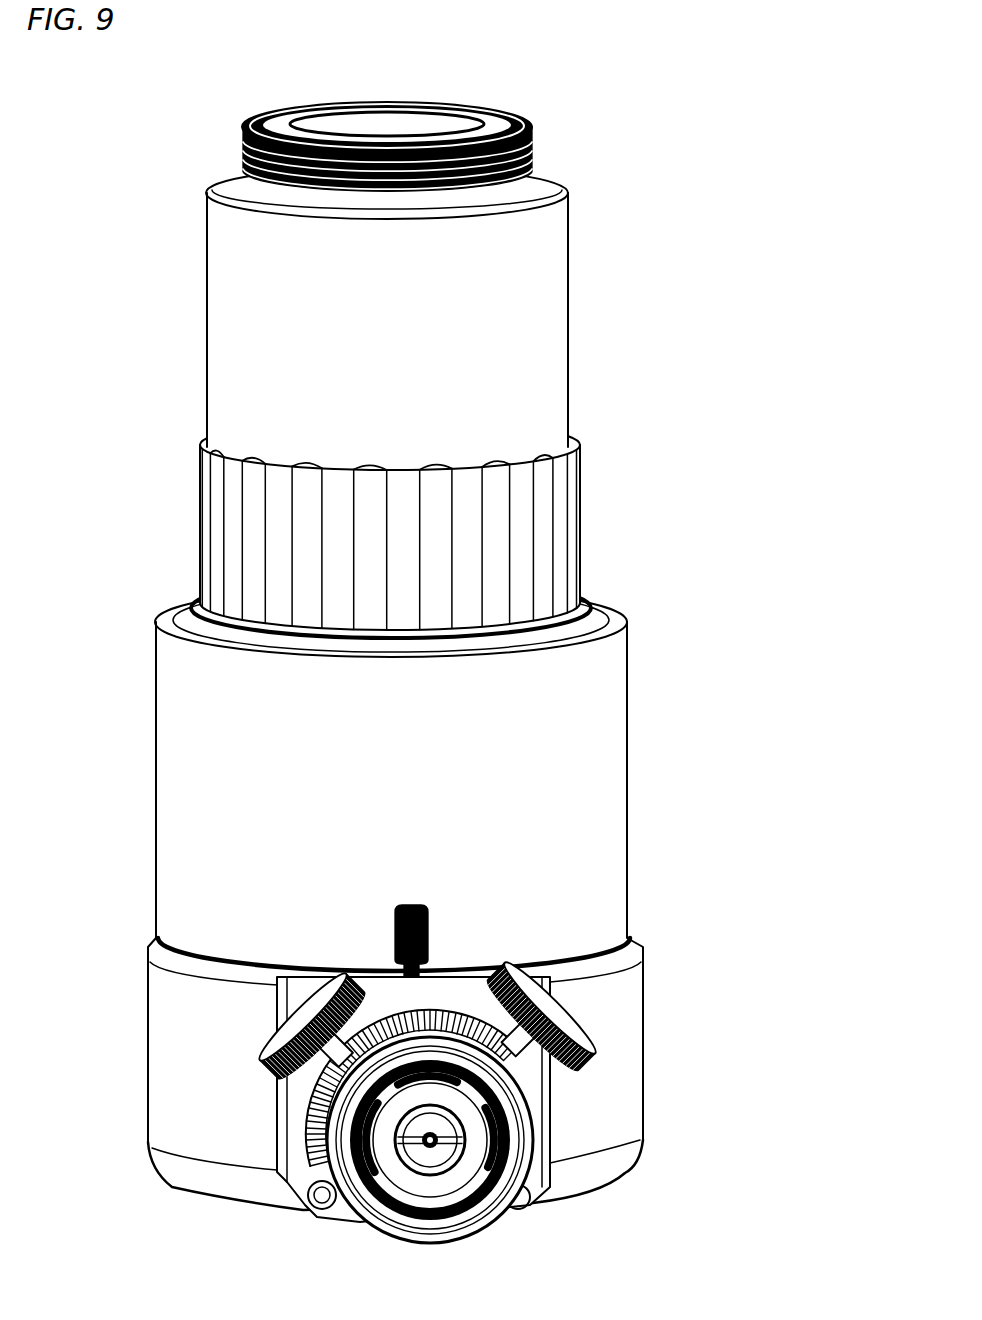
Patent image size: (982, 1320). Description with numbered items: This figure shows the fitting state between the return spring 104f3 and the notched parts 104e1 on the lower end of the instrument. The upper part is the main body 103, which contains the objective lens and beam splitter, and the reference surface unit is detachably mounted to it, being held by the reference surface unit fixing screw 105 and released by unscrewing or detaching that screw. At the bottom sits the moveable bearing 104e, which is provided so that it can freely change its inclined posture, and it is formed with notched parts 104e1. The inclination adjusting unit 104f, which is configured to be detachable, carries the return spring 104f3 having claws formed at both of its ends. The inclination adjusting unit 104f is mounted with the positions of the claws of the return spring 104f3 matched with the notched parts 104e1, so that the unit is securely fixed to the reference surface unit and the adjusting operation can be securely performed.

The main body 103 is at (617, 778).
The reference surface unit fixing screw 105 is at (432, 935).
The inclination adjusting unit 104f is at (527, 1117).
The return spring 104f3 is at (360, 1162).
The moveable bearing 104e is at (430, 1180).
The notched parts 104e1 is at (385, 1177).